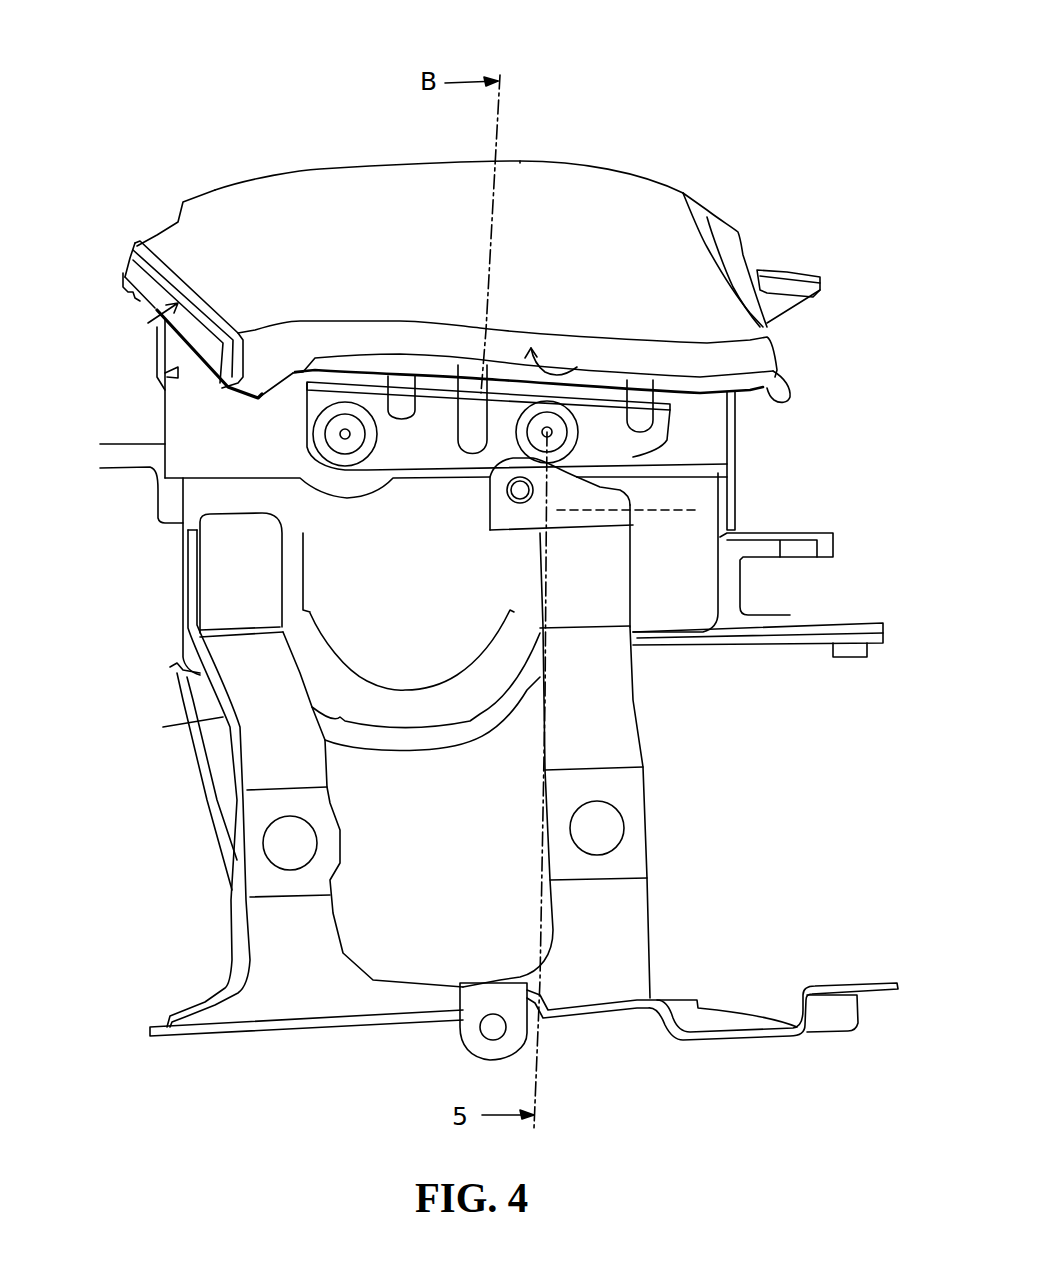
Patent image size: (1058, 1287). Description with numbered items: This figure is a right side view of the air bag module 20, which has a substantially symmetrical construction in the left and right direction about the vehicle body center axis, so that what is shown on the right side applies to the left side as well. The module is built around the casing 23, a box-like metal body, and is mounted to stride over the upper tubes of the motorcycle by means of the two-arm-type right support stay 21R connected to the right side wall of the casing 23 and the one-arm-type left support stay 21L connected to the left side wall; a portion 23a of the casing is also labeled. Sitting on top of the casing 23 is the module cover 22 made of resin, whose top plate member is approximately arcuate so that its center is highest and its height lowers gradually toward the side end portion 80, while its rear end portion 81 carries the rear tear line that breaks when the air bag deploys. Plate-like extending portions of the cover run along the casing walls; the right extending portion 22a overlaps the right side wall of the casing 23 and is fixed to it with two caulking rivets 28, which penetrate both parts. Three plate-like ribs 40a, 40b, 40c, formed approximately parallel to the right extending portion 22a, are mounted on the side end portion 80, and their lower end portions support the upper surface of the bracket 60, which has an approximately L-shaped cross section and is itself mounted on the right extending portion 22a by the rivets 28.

The air bag module 20 is at (533, 148).
The module cover 22 is at (650, 190).
The right extending portion 22a is at (193, 410).
The caulking rivets 28 is at (314, 431).
The bracket 60 is at (670, 434).
The side end portion 80 is at (640, 397).
The rear end portion 81 is at (155, 322).
The plate-like rib 40a is at (331, 376).
The plate-like rib 40b is at (475, 387).
The plate-like rib 40c is at (667, 407).
The casing 23 is at (673, 630).
The bracket 23a is at (687, 592).
The left support stay 21L is at (170, 673).
The right support stay 21R is at (633, 932).